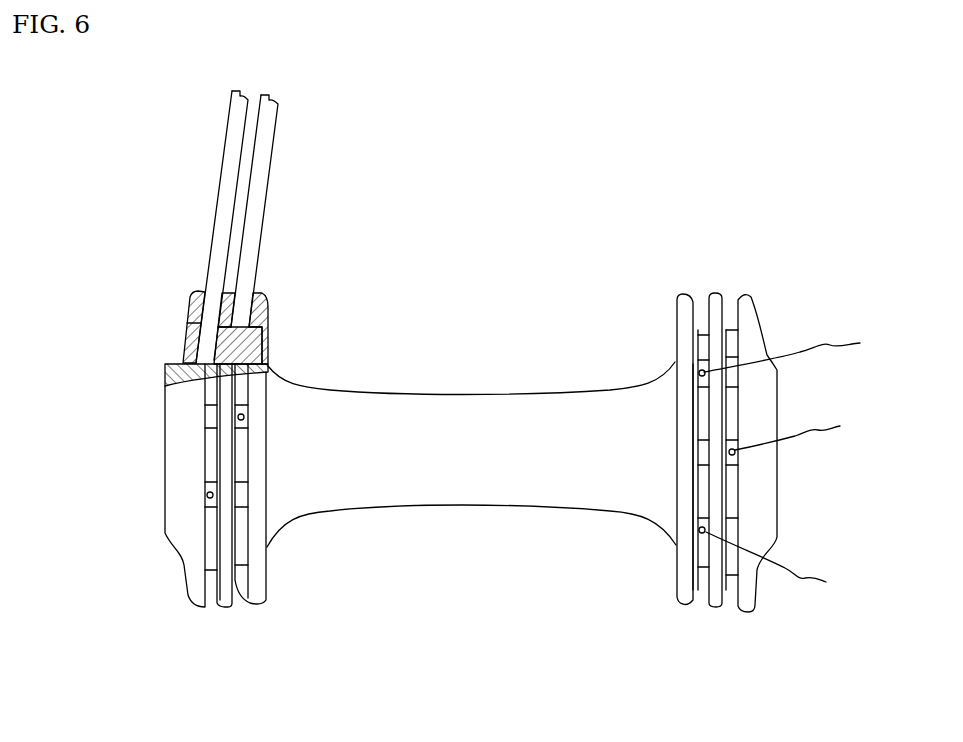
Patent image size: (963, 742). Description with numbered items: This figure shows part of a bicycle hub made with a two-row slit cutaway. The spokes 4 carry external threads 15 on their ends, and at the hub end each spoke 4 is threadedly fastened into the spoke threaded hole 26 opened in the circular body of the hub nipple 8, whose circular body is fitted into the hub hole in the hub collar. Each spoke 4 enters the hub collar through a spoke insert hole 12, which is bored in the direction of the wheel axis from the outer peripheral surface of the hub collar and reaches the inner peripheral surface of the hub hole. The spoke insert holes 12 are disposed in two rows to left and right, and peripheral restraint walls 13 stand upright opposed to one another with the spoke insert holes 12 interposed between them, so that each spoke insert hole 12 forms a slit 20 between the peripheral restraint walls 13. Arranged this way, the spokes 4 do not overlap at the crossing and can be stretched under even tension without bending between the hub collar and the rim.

The spoke 4 is at (226, 163).
The hub nipple 8 is at (263, 342).
The external threads 15 is at (185, 321).
The spoke insert hole 12 is at (698, 377).
The peripheral restraint wall 13 is at (683, 588).
The slit 20 is at (212, 600).
The spoke threaded hole 26 is at (799, 464).